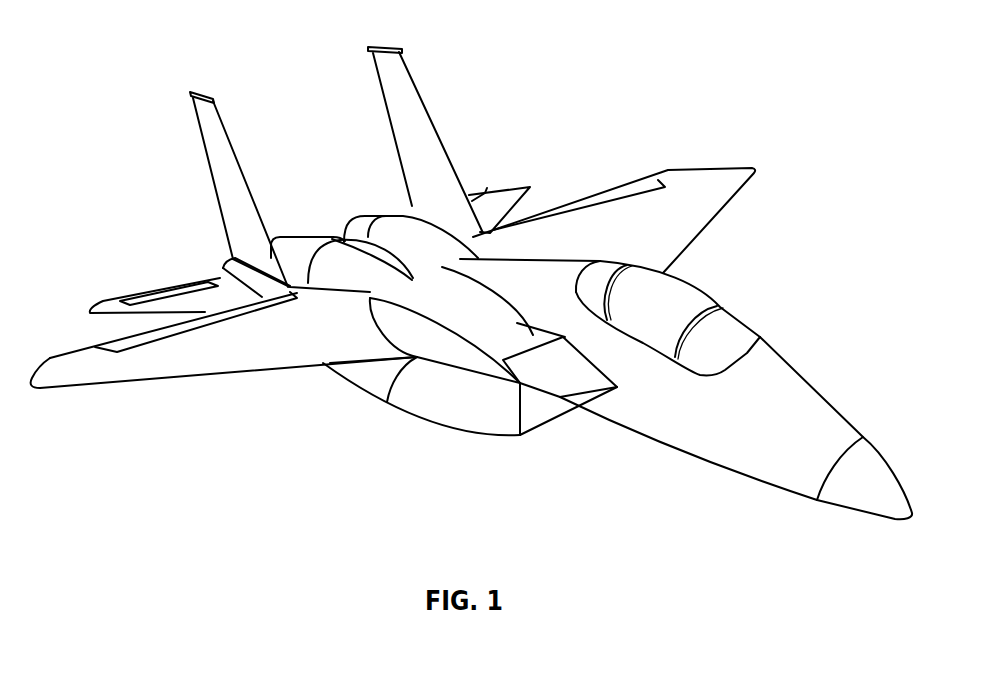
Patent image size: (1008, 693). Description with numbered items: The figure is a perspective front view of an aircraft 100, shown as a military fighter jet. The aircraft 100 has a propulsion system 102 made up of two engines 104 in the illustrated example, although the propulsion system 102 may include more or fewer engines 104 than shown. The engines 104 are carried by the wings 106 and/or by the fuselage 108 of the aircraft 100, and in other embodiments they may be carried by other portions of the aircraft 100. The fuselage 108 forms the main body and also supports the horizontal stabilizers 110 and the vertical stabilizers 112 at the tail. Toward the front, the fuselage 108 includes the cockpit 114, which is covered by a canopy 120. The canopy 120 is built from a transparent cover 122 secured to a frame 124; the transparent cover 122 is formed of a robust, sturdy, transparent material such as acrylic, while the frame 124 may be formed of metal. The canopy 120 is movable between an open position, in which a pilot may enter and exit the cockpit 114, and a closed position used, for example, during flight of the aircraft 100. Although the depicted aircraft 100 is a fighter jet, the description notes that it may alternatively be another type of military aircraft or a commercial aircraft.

The aircraft 100 is at (144, 48).
The propulsion system 102 is at (505, 503).
The engines 104 is at (762, 337).
The wings 106 is at (233, 374).
The fuselage 108 is at (433, 423).
The horizontal stabilizers 110 is at (187, 282).
The vertical stabilizers 112 is at (232, 151).
The cockpit 114 is at (688, 296).
The canopy 120 is at (666, 322).
The transparent cover 122 is at (650, 288).
The frame 124 is at (717, 308).